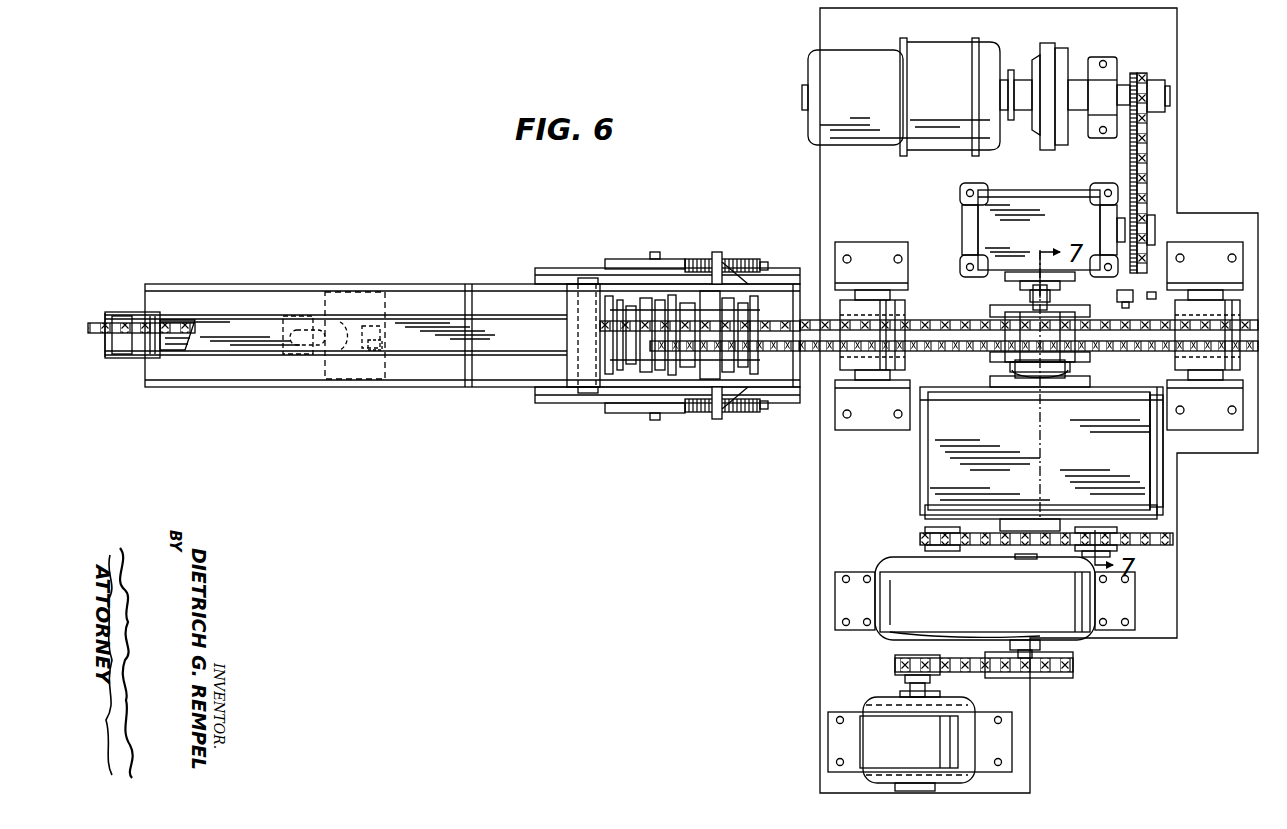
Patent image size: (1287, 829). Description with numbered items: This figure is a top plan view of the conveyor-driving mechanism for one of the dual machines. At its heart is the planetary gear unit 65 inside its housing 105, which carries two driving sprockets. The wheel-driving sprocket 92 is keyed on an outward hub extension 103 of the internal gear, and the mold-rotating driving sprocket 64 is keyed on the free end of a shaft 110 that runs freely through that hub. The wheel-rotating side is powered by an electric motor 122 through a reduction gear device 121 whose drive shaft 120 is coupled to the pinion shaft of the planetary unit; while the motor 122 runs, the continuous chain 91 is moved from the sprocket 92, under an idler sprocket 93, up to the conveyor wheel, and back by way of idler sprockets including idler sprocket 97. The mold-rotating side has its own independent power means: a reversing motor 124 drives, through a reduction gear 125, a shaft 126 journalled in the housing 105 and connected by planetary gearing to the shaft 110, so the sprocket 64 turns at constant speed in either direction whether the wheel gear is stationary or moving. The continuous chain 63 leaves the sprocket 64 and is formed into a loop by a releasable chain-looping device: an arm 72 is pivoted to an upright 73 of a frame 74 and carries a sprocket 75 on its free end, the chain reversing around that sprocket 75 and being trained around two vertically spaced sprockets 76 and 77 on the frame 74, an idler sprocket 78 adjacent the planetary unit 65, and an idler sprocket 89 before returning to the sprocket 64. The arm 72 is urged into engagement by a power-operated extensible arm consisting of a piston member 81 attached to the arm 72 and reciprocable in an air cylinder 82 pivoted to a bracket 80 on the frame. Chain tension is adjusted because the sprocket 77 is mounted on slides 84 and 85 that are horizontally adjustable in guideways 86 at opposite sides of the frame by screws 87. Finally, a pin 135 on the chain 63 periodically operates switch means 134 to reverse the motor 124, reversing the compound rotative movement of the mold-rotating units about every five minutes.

The continuous chain 63 is at (94, 320).
The driving sprocket 64 is at (1070, 303).
The planetary gear unit 65 is at (1042, 453).
The arm 72 is at (442, 315).
The upright 73 is at (575, 284).
The frame 74 is at (500, 284).
The sprocket 75 is at (130, 325).
The sprocket 76 is at (776, 309).
The sprocket 77 is at (645, 352).
The idler sprocket 78 is at (905, 318).
The bracket 80 is at (372, 352).
The piston member 81 is at (312, 322).
The air cylinder 82 is at (370, 325).
The slide 84 is at (640, 259).
The slide 85 is at (640, 413).
The guideways 86 is at (595, 268).
The screws 87 is at (700, 259).
The idler sprocket 89 is at (1176, 322).
The continuous chain 91 is at (962, 352).
The wheel-driving sprocket 92 is at (1000, 352).
The idler sprocket 93 is at (860, 345).
The idler sprocket 97 is at (1238, 350).
The outward hub extension 103 is at (1034, 372).
The housing 105 is at (1148, 450).
The shaft 110 is at (1022, 306).
The drive shaft 120 is at (1047, 290).
The reduction gear device 121 is at (990, 241).
The electric motor 122 is at (885, 152).
The motor 124 is at (870, 698).
The reduction gear 125 is at (885, 640).
The shaft 126 is at (1115, 527).
The switch means 134 is at (1124, 290).
The pin 135 is at (1160, 283).